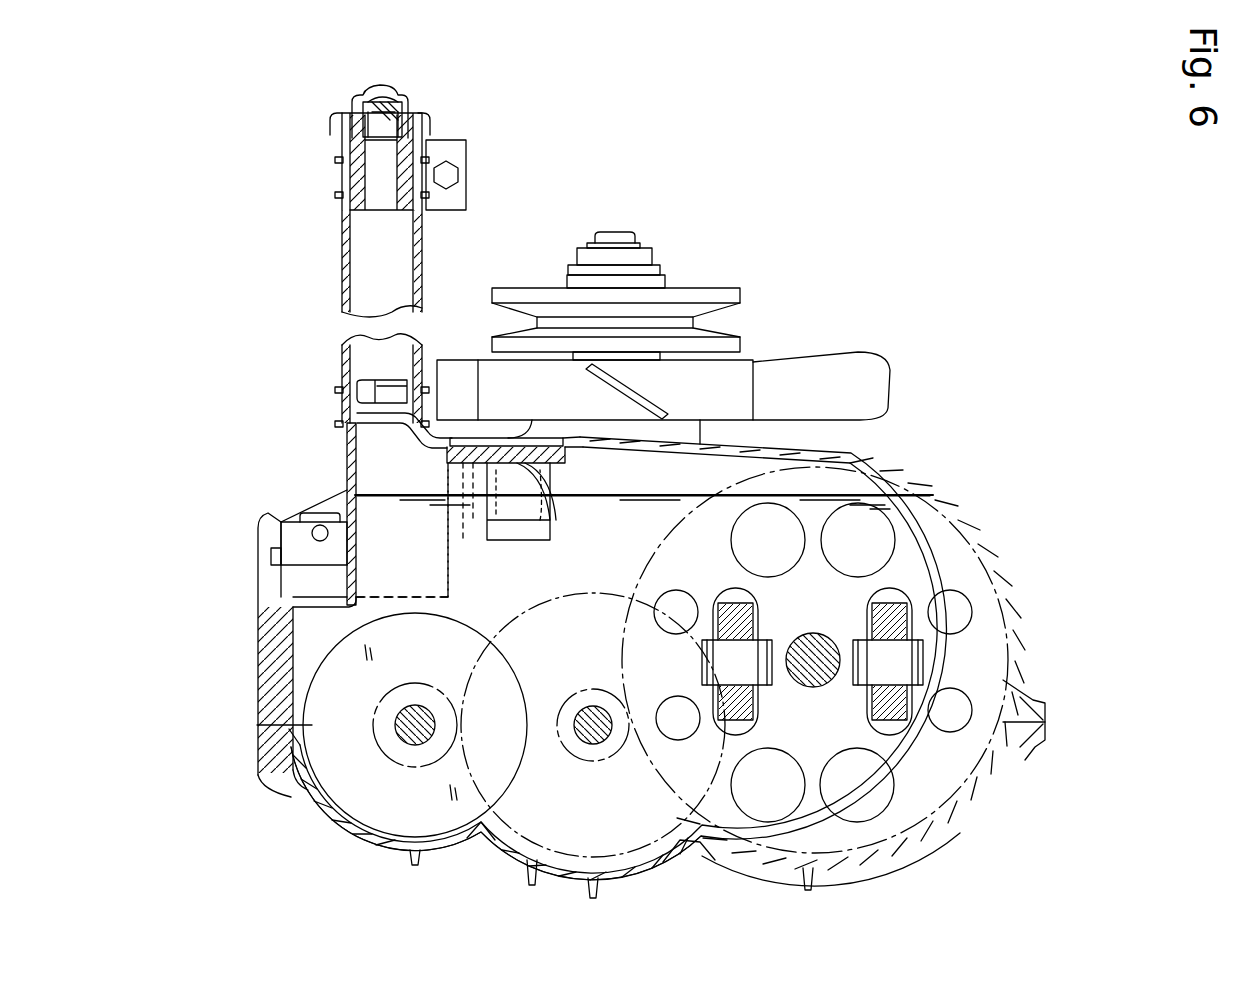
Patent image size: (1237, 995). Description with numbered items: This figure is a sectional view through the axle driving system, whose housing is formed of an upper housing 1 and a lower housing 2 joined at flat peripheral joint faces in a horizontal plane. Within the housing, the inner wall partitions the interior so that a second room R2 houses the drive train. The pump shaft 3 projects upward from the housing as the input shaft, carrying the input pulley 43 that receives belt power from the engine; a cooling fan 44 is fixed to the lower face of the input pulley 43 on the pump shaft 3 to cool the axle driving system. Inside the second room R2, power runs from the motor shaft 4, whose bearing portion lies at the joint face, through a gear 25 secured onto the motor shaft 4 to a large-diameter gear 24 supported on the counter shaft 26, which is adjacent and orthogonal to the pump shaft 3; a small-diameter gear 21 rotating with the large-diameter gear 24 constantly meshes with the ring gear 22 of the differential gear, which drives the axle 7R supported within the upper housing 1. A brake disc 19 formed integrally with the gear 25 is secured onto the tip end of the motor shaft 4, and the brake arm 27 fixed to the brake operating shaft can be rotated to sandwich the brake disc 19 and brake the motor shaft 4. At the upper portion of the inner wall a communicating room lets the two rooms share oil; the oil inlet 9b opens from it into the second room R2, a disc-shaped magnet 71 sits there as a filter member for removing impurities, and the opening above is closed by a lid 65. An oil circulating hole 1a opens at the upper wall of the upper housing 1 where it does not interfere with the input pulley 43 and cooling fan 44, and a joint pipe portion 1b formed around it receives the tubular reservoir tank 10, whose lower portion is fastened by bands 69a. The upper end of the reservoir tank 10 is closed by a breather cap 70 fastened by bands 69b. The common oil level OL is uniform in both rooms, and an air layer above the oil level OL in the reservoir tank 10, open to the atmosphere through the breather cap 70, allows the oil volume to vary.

The upper housing 1 is at (1007, 583).
The oil circulating hole 1a is at (357, 402).
The joint pipe portion 1b is at (347, 430).
The lower housing 2 is at (993, 777).
The pump shaft 3 is at (620, 232).
The motor shaft 4 is at (395, 733).
The axle 7R is at (810, 683).
The oil inlet 9b is at (547, 510).
The reservoir tank 10 is at (340, 254).
The brake disc 19 is at (350, 818).
The small-diameter gear 21 is at (590, 687).
The ring gear 22 is at (660, 768).
The large-diameter gear 24 is at (532, 862).
The gear 25 is at (410, 682).
The counter shaft 26 is at (583, 740).
The brake arm 27 is at (280, 513).
The input pulley 43 is at (733, 290).
The cooling fan 44 is at (837, 352).
The lid 65 is at (462, 438).
The bands 69a is at (337, 423).
The bands 69b is at (337, 195).
The breather cap 70 is at (408, 106).
The magnet 71 is at (533, 482).
The oil level OL is at (852, 493).
The second room R2 is at (520, 590).